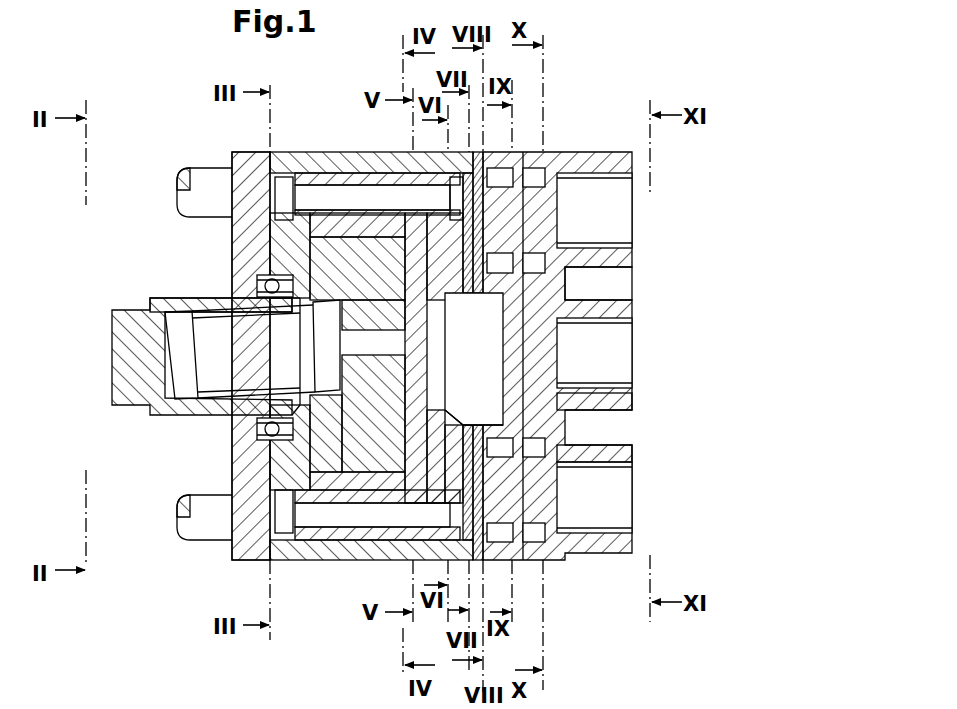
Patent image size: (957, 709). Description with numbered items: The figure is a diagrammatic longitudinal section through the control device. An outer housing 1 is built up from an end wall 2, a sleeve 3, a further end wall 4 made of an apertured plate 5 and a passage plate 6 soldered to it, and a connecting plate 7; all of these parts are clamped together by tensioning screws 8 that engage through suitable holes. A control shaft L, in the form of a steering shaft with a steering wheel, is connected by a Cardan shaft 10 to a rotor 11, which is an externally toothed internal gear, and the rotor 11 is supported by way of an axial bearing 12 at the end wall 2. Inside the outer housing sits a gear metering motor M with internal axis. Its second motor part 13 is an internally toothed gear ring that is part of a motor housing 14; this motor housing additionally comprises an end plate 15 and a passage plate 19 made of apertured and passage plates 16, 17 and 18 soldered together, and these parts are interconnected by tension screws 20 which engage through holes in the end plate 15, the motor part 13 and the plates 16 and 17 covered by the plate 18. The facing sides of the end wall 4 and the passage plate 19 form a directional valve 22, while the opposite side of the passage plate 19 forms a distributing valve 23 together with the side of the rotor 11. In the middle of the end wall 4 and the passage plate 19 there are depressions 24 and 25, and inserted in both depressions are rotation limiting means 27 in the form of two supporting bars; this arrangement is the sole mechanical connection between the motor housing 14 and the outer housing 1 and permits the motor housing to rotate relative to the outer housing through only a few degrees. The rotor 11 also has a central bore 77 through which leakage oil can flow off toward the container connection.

The outer housing 1 is at (230, 468).
The end wall 2 is at (245, 228).
The sleeve 3 is at (295, 158).
The end wall 4 is at (492, 211).
The apertured plate 5 is at (485, 245).
The passage plate 6 is at (503, 248).
The connecting plate 7 is at (617, 258).
The tensioning screws 8 is at (205, 182).
The Cardan shaft 10 is at (208, 337).
The rotor 11 is at (250, 432).
The axial bearing 12 is at (262, 282).
The second motor part 13 is at (333, 532).
The motor housing 14 is at (372, 536).
The end plate 15 is at (278, 470).
The apertured plate 16 is at (480, 492).
The apertured plate 17 is at (480, 445).
The passage plate 18 is at (555, 452).
The passage plate 19 is at (480, 425).
The tension screws 20 is at (302, 520).
The directional valve 22 is at (489, 288).
The distributing valve 23 is at (407, 312).
The depression 24 is at (487, 438).
The depression 25 is at (453, 438).
The rotation limiting means 27 is at (477, 379).
The central bore 77 is at (350, 343).
The control shaft L is at (125, 357).
The gear metering motor M is at (351, 258).